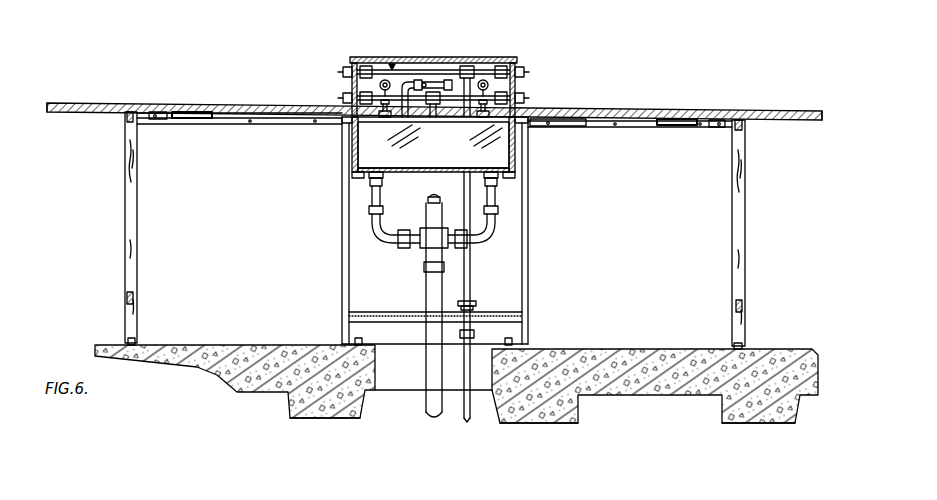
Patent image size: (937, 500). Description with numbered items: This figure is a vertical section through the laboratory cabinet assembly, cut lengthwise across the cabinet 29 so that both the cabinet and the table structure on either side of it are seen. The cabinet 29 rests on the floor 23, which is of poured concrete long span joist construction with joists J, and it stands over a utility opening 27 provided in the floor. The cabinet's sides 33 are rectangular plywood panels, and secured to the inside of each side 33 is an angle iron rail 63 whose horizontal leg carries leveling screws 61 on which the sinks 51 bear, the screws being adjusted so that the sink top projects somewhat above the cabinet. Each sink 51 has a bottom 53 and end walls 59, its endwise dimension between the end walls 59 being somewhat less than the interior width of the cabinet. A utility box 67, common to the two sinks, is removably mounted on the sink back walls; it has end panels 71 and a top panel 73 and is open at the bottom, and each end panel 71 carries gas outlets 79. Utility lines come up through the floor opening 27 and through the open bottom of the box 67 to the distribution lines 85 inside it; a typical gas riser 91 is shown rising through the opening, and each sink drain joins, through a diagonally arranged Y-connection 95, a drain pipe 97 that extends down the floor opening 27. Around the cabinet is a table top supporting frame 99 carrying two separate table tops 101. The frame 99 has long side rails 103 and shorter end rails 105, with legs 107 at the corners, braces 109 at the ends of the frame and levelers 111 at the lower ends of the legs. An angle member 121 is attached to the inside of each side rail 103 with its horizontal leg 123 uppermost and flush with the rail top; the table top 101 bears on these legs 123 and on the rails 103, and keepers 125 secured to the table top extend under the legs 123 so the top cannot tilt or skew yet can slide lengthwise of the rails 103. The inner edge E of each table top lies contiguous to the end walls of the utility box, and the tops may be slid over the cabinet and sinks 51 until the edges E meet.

The table top 101 is at (103, 103).
The inner edge of the table top E is at (344, 108).
The table top supporting frame 99 is at (124, 158).
The leg 107 is at (128, 232).
The end rail 105 is at (128, 119).
The brace 109 is at (126, 297).
The leveler 111 is at (128, 342).
The angle member 121 is at (268, 126).
The horizontal leg of the angle member 123 is at (156, 125).
The keeper 125 is at (205, 122).
The side rail 103 is at (197, 127).
The cabinet 29 is at (340, 155).
The side 33 is at (341, 224).
The box 67 is at (506, 55).
The top panel 73 is at (432, 57).
The distribution lines 85 is at (392, 64).
The end panel 71 is at (350, 83).
The gas outlet 79 is at (350, 68).
The sink 51 is at (521, 148).
The end wall 59 is at (357, 139).
The bottom 53 is at (419, 168).
The angle iron rail 63 is at (352, 176).
The leveling screw 61 is at (371, 187).
The Y-connection 95 is at (393, 242).
The drain pipe 97 is at (427, 296).
The utility line riser 91 is at (471, 270).
The floor 23 is at (288, 344).
The utility opening 27 is at (375, 371).
The joist J is at (288, 406).